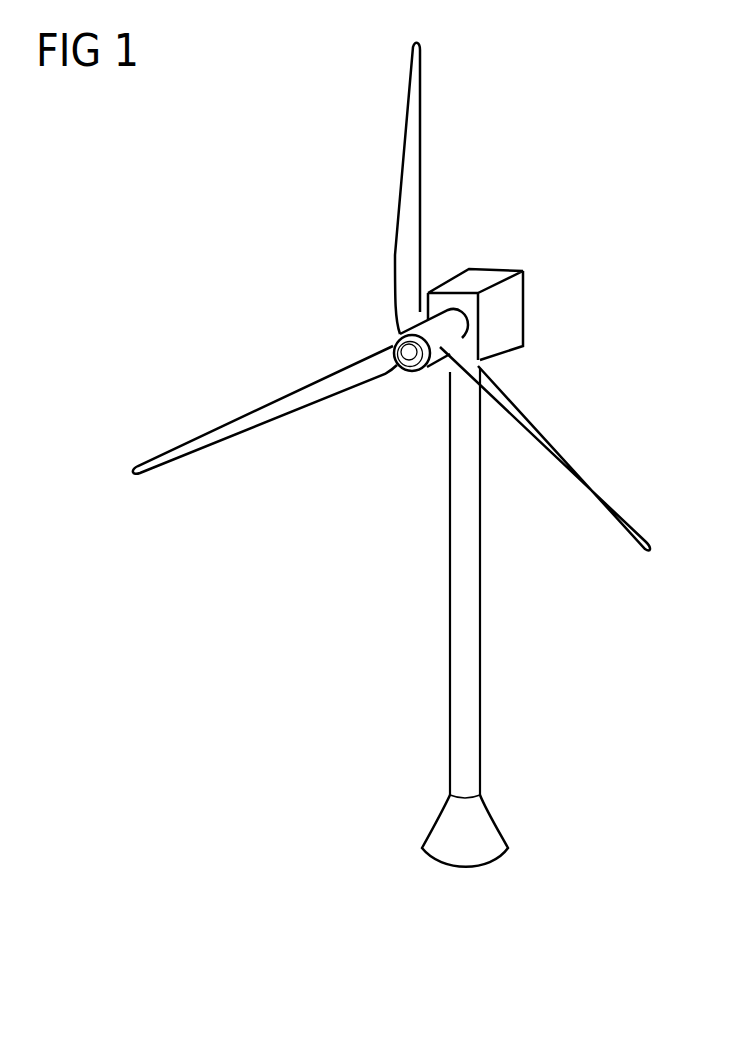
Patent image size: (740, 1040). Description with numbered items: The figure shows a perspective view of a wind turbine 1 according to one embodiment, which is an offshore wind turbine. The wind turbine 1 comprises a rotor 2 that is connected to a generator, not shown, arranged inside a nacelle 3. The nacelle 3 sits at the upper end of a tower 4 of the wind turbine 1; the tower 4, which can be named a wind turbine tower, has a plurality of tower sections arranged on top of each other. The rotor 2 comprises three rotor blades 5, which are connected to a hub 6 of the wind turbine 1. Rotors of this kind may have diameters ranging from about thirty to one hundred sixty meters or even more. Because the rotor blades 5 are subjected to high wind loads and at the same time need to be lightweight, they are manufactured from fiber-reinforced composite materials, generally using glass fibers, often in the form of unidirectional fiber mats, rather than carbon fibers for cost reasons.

The wind turbine 1 is at (243, 202).
The rotor 2 is at (248, 410).
The nacelle 3 is at (508, 318).
The tower 4 is at (472, 742).
The rotor blade 5 is at (408, 198).
The hub 6 is at (453, 336).